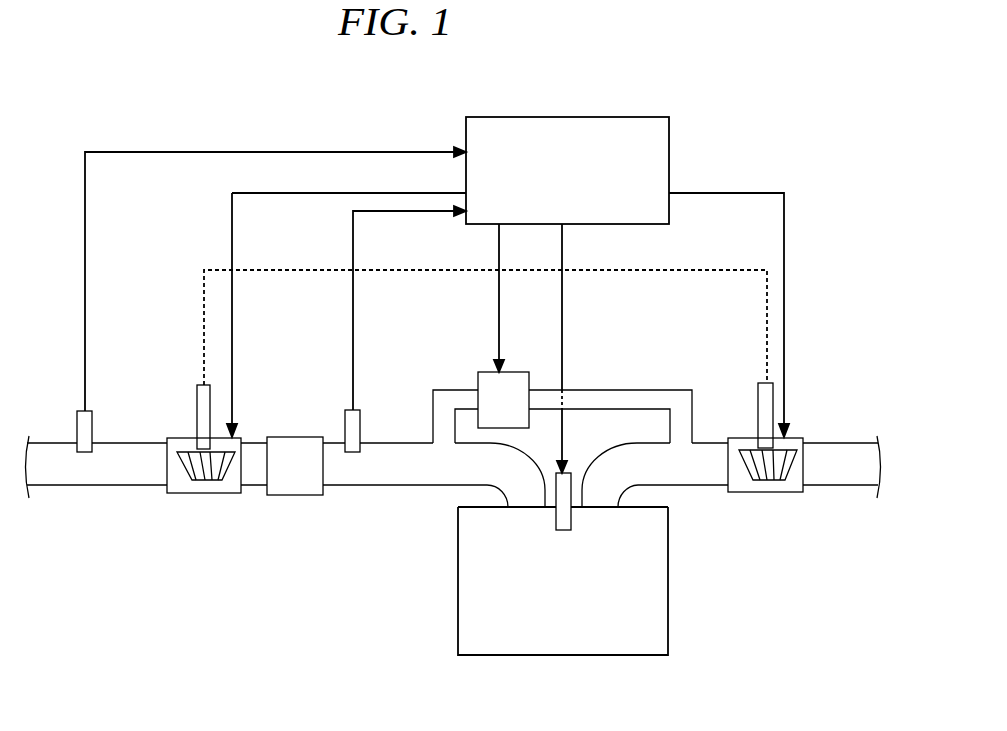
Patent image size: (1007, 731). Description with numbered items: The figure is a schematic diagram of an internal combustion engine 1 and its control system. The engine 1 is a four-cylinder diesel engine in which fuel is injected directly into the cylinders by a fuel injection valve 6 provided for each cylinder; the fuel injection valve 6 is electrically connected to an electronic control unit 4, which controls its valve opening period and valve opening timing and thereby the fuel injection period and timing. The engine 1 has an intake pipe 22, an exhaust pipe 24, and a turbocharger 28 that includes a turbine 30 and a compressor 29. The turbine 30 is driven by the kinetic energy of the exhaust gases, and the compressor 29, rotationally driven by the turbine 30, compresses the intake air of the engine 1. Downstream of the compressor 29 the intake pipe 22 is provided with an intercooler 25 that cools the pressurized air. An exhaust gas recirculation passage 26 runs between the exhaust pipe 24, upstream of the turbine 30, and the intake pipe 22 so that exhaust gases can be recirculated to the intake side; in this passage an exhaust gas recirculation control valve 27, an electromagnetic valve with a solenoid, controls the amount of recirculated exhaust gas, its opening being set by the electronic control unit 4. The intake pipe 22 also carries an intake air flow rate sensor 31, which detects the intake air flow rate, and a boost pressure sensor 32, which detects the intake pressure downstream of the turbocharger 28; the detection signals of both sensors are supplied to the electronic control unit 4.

The internal combustion engine 1 is at (553, 655).
The electronic control unit 4 is at (520, 117).
The fuel injection valve 6 is at (567, 473).
The intake pipe 22 is at (393, 443).
The exhaust pipe 24 is at (700, 485).
The intercooler 25 is at (297, 437).
The exhaust gas recirculation passage 26 is at (593, 390).
The exhaust gas recirculation control valve 27 is at (525, 372).
The turbocharger 28 is at (181, 411).
The compressor 29 is at (210, 495).
The turbine 30 is at (763, 492).
The intake air flow rate sensor 31 is at (78, 410).
The boost pressure sensor 32 is at (358, 410).